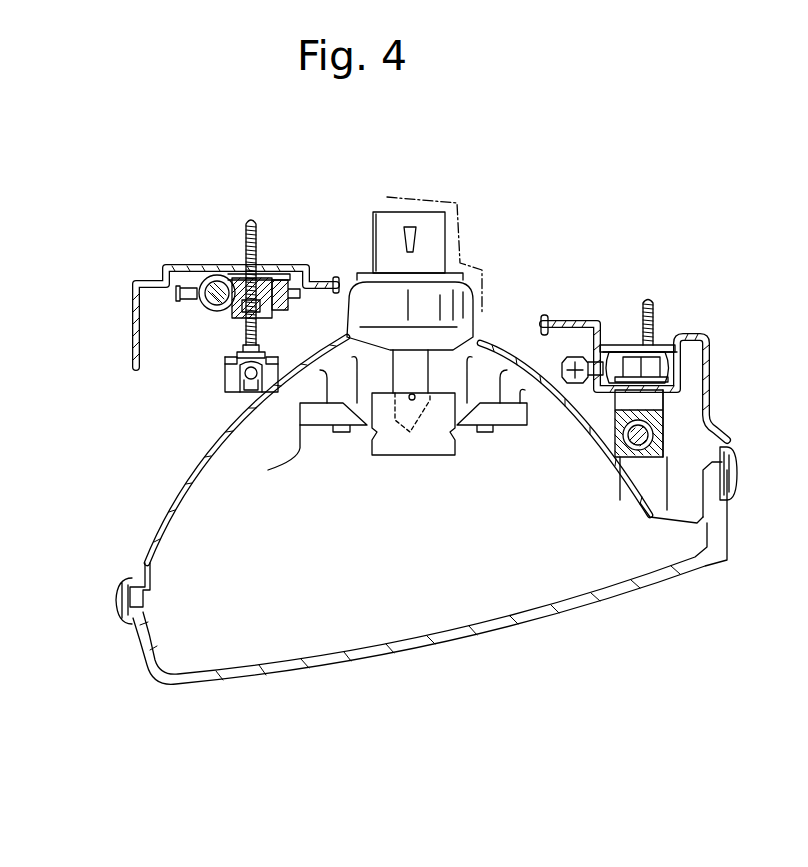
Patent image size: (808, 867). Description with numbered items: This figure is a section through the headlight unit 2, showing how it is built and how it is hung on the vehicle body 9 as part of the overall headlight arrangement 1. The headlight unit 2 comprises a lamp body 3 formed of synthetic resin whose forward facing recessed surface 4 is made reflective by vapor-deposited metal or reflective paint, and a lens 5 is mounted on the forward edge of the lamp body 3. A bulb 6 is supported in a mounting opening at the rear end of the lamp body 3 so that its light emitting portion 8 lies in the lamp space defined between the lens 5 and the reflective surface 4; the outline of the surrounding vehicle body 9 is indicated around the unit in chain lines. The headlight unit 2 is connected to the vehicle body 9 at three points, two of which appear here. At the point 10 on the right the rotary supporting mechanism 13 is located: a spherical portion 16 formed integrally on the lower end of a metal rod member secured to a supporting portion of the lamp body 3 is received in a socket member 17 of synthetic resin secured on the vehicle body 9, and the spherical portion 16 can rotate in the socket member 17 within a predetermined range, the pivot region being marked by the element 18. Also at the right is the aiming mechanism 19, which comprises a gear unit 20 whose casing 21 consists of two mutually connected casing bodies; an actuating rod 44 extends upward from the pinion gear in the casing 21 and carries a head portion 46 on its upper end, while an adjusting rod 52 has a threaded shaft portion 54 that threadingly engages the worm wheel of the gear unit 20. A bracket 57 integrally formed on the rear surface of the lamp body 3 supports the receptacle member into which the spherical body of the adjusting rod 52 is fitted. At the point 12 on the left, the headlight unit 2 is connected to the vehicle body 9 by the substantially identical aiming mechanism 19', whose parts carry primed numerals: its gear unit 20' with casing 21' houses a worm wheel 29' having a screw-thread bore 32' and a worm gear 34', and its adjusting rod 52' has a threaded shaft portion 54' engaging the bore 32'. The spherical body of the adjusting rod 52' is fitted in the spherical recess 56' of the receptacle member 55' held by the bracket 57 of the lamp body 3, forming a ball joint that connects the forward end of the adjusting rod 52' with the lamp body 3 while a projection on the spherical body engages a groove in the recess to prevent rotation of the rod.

The headlamp unit 1 is at (740, 147).
The headlight unit 2 is at (292, 688).
The lamp body 3 is at (183, 495).
The recessed surface 4 is at (170, 522).
The lens 5 is at (673, 577).
The bulb 6 is at (397, 370).
The light emitting portion 8 is at (403, 417).
The vehicle body 9 is at (130, 310).
The point 10 is at (676, 422).
The point 12 is at (208, 378).
The rotary supporting mechanism 13 is at (613, 427).
The spherical portion 16 is at (710, 387).
The socket member 17 is at (664, 413).
The pivot pin 18 is at (652, 440).
The aiming mechanism 19 is at (629, 308).
The gear unit 20 is at (640, 307).
The casing 21 is at (650, 276).
The actuating rod 44 is at (580, 322).
The head portion 46 is at (570, 356).
The adjusting rod 52 is at (643, 272).
The shaft portion 54 is at (641, 307).
The bracket 57 is at (637, 470).
The aiming mechanism 19' is at (203, 211).
The gear unit 20' is at (238, 236).
The casing 21' is at (259, 196).
The worm wheel 29' is at (266, 232).
The screw-thread bore 32' is at (223, 344).
The worm gear 34' is at (190, 231).
The adjusting rod 52' is at (282, 228).
The shaft portion 54' is at (284, 233).
The receptacle member 55' is at (192, 392).
The spherical recess 56' is at (171, 405).